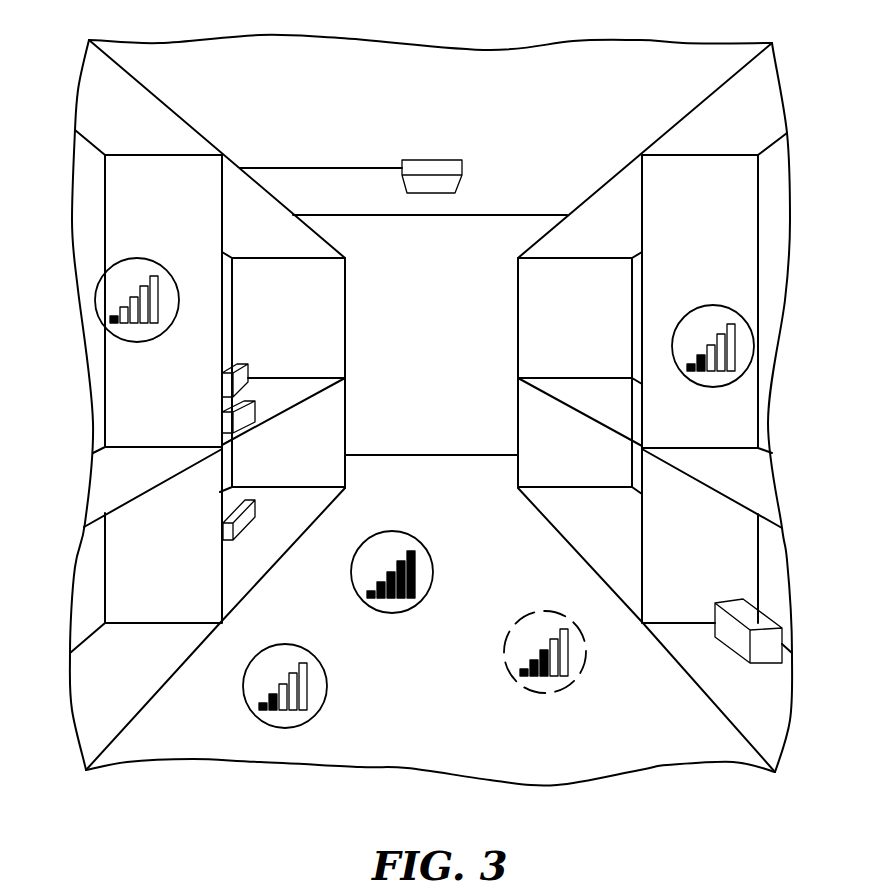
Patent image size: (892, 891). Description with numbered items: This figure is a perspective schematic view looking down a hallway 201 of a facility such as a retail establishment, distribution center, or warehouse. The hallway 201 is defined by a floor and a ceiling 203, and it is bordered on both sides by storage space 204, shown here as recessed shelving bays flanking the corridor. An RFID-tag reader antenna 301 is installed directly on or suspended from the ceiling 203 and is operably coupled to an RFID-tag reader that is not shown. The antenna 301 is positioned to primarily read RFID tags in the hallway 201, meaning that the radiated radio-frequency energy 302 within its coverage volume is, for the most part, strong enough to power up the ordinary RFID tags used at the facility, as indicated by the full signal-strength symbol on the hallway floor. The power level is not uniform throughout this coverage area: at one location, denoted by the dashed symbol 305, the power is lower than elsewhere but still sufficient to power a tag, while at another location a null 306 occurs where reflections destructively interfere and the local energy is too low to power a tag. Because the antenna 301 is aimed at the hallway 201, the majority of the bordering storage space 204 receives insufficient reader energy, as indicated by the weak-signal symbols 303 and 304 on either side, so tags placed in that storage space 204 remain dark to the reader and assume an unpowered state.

The hallway 201 is at (448, 504).
The ceiling 203 is at (405, 78).
The storage space 204 is at (303, 290).
The RFID-tag reader antenna 301 is at (438, 168).
The radiated radio-frequency energy 302 is at (427, 552).
The insufficient reader energy area 303 is at (163, 338).
The insufficient reader energy area 304 is at (725, 388).
The reduced power level area 305 is at (578, 677).
The null 306 is at (323, 663).